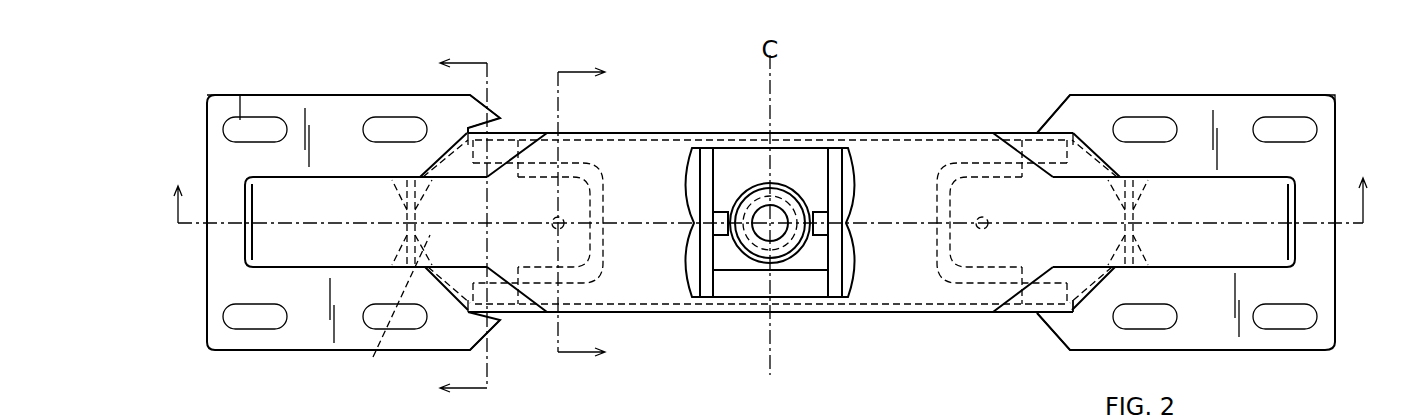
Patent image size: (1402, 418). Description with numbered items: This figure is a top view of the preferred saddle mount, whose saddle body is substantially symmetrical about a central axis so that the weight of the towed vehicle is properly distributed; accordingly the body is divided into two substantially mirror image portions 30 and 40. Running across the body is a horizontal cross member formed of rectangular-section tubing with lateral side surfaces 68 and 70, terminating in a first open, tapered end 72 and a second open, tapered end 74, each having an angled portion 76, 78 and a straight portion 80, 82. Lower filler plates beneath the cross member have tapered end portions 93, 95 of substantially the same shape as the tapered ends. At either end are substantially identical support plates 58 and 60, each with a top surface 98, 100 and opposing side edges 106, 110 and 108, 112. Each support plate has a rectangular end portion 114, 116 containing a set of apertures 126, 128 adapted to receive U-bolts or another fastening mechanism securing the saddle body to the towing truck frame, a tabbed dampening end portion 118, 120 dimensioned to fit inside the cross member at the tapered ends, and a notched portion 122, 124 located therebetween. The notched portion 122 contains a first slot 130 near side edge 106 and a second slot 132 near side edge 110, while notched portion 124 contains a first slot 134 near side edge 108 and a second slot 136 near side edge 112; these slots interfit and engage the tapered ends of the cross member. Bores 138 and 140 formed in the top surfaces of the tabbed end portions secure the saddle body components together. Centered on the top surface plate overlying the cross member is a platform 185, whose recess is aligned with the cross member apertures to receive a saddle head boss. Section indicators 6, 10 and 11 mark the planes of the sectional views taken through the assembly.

The section line 6- 6 is at (767, 192).
The section line 10- 10 is at (463, 226).
The section line 11- 11 is at (581, 212).
The mirror image portion 30 is at (380, 86).
The mirror image portion 40 is at (1167, 92).
The support plate 58 is at (213, 103).
The support plate 60 is at (1240, 103).
The lateral side surface 68 is at (622, 312).
The lateral side surface 70 is at (613, 133).
The first open, tapered end 72 is at (393, 264).
The second open, tapered end 74 is at (1148, 255).
The angled portion 76 is at (440, 153).
The angled portion 78 is at (1098, 172).
The straight portion 80 is at (407, 210).
The straight portion 82 is at (1135, 215).
The tapered end portion 93 is at (382, 313).
The tapered end portion 95 is at (1040, 314).
The top surface 98 is at (215, 160).
The top surface 100 is at (1318, 160).
The side edge 106 is at (256, 352).
The side edge 108 is at (1280, 350).
The side edge 110 is at (290, 95).
The side edge 112 is at (1312, 95).
The rectangular end portion 114 is at (216, 292).
The rectangular end portion 116 is at (1318, 262).
The tabbed dampening end portion 118 is at (605, 192).
The tabbed dampening end portion 120 is at (948, 167).
The notched portion 122 is at (468, 126).
The notched portion 124 is at (1040, 128).
The set of apertures 126 is at (237, 330).
The set of apertures 128 is at (1308, 324).
The first slot or cavity 130 is at (472, 318).
The second slot or cavity 132 is at (476, 122).
The first slot or cavity 134 is at (1063, 318).
The second slot or cavity 136 is at (1080, 130).
The bore 138 is at (562, 232).
The bore 140 is at (940, 244).
The platform 185 is at (676, 142).